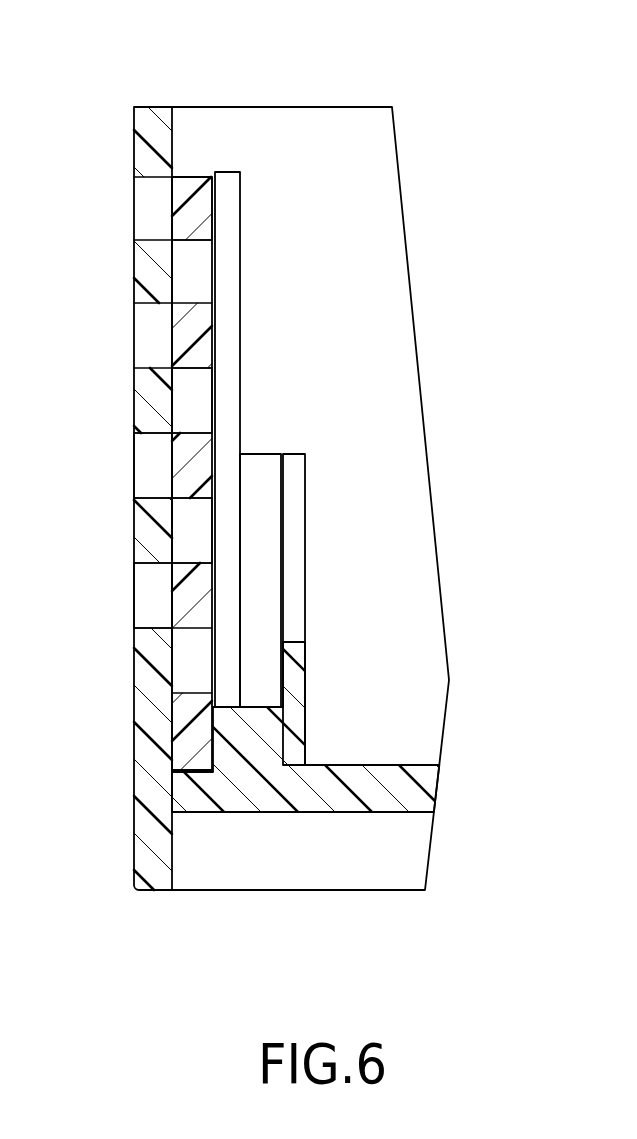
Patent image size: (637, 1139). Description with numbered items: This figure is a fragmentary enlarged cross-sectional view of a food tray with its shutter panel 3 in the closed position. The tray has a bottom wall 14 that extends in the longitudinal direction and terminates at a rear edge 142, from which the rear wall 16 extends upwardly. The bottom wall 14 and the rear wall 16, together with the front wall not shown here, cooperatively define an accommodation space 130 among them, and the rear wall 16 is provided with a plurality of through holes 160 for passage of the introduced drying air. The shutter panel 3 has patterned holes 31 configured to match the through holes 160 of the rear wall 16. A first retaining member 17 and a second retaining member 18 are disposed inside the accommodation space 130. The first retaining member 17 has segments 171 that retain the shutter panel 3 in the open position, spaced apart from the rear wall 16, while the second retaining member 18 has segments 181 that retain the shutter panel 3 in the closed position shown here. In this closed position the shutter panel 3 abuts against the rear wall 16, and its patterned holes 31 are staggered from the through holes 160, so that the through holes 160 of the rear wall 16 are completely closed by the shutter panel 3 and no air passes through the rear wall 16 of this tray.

The accommodation space 130 is at (382, 548).
The rear wall 16 is at (155, 700).
The through holes 160 is at (148, 477).
The rear edge 142 is at (162, 783).
The shutter panel 3 is at (186, 328).
The patterned holes 31 is at (192, 508).
The segments 181 is at (197, 180).
The second retaining member 18 is at (256, 169).
The segments 171 is at (260, 472).
The first retaining member 17 is at (322, 489).
The bottom wall 14 is at (380, 790).